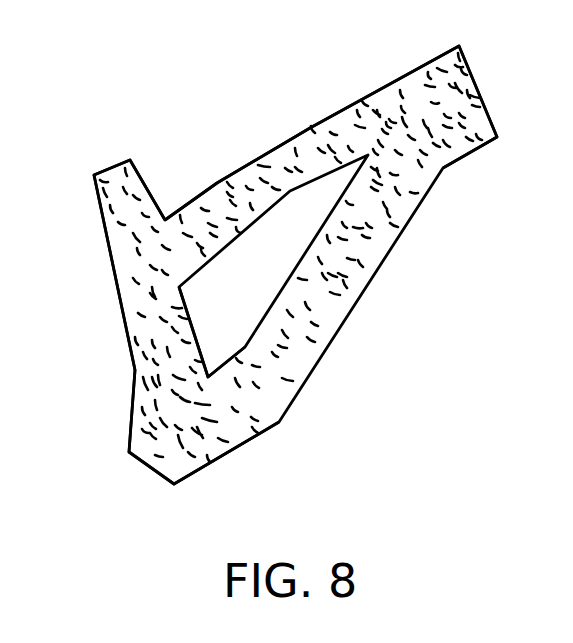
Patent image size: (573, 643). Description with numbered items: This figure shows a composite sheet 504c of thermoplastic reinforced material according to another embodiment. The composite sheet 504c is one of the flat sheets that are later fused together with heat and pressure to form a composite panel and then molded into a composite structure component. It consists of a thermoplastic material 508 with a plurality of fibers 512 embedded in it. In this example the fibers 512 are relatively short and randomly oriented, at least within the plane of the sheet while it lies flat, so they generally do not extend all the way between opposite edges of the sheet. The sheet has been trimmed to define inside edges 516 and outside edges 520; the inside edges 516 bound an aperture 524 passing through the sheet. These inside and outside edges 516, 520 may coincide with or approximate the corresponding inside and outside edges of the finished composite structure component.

The composite sheet 504c is at (107, 239).
The thermoplastic material 508 is at (135, 301).
The fibers 512 is at (357, 127).
The inside edges 516 is at (201, 337).
The outside edges 520 is at (148, 468).
The aperture 524 is at (303, 246).